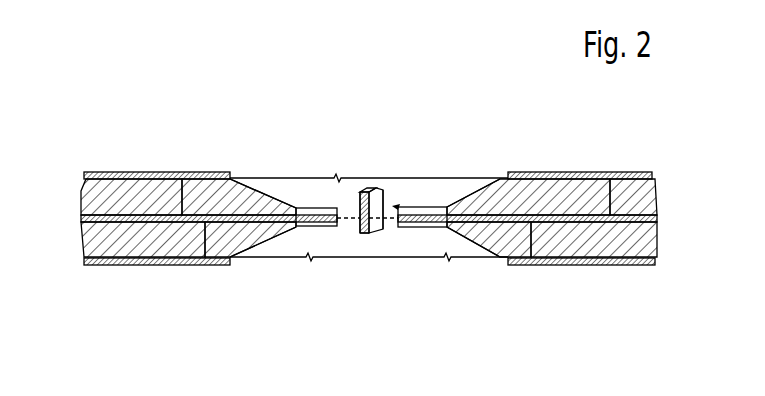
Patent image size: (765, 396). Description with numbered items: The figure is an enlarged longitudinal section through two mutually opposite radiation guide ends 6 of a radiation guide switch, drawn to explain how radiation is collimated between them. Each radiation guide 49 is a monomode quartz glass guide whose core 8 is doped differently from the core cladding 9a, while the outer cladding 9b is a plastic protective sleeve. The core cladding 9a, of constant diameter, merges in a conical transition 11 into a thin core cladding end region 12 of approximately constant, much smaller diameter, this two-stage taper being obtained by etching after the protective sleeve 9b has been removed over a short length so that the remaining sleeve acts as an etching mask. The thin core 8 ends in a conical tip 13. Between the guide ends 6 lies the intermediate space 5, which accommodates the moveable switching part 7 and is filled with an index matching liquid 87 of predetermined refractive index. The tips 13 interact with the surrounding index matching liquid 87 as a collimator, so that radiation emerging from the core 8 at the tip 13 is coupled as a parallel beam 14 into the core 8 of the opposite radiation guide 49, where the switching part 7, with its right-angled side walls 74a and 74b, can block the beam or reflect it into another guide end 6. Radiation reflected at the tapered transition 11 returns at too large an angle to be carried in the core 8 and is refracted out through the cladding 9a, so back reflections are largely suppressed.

The intermediate space 5 is at (386, 176).
The radiation guide end 6 is at (303, 188).
The moveable switching part 7 is at (373, 190).
The core 8 is at (200, 265).
The core cladding 9a is at (183, 186).
The outer cladding 9b is at (113, 150).
The conical transition 11 is at (268, 186).
The core cladding end region 12 is at (306, 232).
The conical tip 13 is at (340, 227).
The parallel beam 14 is at (361, 236).
The radiation guide 49 is at (143, 275).
The switching part side wall 74a is at (384, 197).
The switching part side wall 74b is at (359, 203).
The index matching liquid 87 is at (406, 201).